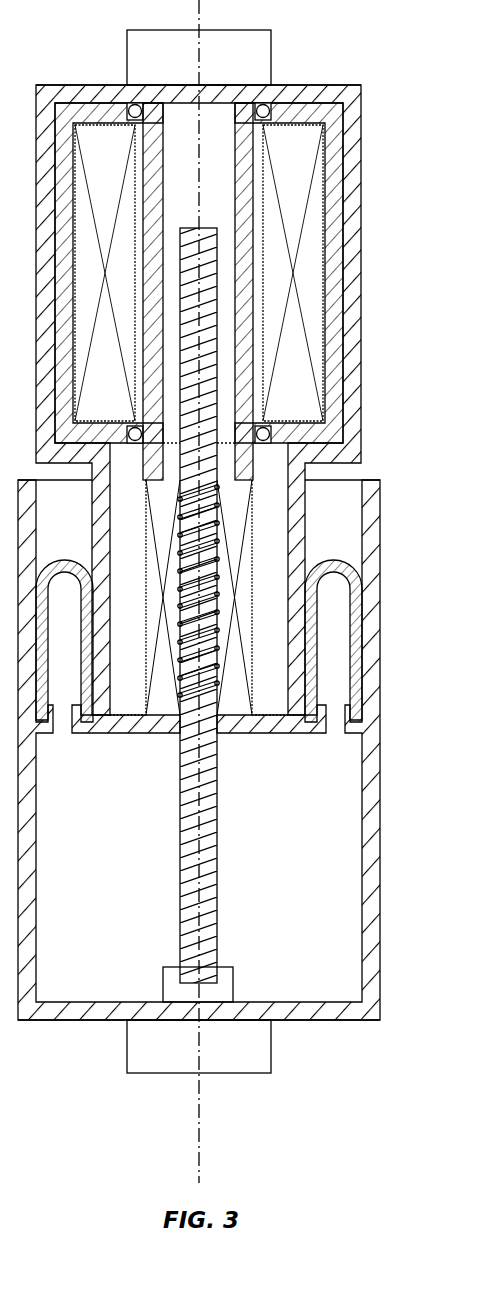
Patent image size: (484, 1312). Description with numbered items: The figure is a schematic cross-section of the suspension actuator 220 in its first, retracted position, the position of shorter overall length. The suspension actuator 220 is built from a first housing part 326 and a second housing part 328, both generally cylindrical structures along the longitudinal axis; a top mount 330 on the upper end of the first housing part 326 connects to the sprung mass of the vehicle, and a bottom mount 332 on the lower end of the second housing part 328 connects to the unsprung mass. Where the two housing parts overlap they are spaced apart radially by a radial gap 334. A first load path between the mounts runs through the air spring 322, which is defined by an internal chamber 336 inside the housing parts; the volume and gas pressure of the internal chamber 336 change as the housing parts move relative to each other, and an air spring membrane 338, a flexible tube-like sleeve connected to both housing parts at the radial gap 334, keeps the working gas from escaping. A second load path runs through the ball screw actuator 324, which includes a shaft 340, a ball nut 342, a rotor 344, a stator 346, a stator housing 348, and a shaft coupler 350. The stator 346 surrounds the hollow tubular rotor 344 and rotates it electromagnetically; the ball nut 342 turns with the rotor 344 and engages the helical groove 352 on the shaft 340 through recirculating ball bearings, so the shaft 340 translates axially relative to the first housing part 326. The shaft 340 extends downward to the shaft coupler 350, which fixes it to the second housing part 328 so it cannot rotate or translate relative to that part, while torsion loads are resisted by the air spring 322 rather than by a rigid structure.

The suspension actuator 220 is at (77, 74).
The air spring 322 is at (398, 692).
The ball screw actuator 324 is at (380, 206).
The first housing part 326 is at (343, 84).
The second housing part 328 is at (322, 1022).
The top mount 330 is at (273, 40).
The bottom mount 332 is at (127, 1053).
The radial gap 334 is at (343, 535).
The internal chamber 336 is at (340, 851).
The air spring membrane 338 is at (353, 633).
The shaft 340 is at (217, 820).
The ball nut 342 is at (253, 508).
The rotor 344 is at (251, 256).
The stator 346 is at (320, 292).
The stator housing 348 is at (345, 365).
The shaft coupler 350 is at (233, 983).
The helical groove 352 is at (217, 860).